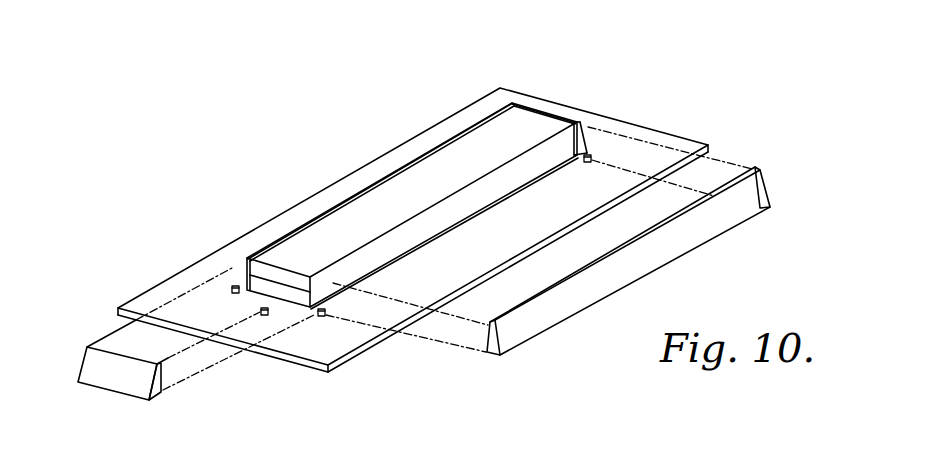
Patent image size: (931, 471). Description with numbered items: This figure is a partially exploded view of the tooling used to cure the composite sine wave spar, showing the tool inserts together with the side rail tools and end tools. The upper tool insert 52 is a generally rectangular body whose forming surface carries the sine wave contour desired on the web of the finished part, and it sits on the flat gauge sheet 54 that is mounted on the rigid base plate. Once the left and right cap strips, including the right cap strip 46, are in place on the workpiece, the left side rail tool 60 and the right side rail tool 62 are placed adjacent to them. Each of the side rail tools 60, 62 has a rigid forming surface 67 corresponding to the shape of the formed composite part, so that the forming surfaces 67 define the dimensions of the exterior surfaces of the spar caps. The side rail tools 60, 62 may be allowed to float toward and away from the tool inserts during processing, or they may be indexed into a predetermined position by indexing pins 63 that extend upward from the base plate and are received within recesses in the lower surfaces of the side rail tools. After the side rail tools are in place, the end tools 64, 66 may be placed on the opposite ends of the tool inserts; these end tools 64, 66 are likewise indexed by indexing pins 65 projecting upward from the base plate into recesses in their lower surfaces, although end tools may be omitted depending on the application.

The right cap strip 46 is at (517, 167).
The upper tool insert 52 is at (520, 130).
The gauge sheet 54 is at (678, 142).
The left side rail tool 60 is at (235, 286).
The right side rail tool 62 is at (688, 223).
The indexing pin 63 is at (324, 316).
The end tool 64 is at (110, 371).
The indexing pin 65 is at (264, 315).
The end tool 66 is at (595, 132).
The forming surface 67 is at (466, 345).